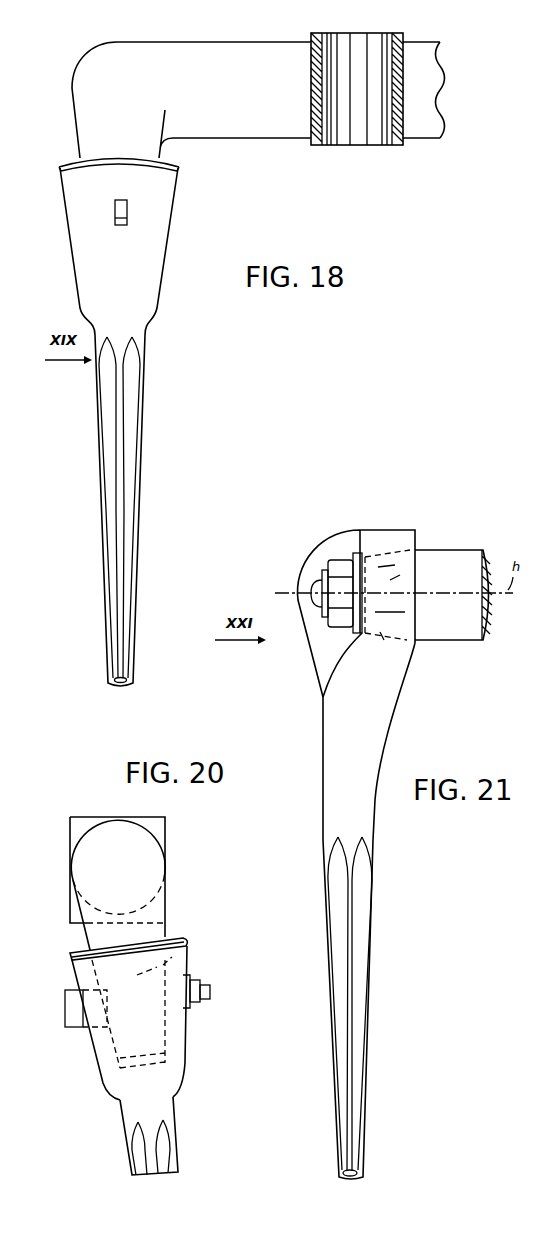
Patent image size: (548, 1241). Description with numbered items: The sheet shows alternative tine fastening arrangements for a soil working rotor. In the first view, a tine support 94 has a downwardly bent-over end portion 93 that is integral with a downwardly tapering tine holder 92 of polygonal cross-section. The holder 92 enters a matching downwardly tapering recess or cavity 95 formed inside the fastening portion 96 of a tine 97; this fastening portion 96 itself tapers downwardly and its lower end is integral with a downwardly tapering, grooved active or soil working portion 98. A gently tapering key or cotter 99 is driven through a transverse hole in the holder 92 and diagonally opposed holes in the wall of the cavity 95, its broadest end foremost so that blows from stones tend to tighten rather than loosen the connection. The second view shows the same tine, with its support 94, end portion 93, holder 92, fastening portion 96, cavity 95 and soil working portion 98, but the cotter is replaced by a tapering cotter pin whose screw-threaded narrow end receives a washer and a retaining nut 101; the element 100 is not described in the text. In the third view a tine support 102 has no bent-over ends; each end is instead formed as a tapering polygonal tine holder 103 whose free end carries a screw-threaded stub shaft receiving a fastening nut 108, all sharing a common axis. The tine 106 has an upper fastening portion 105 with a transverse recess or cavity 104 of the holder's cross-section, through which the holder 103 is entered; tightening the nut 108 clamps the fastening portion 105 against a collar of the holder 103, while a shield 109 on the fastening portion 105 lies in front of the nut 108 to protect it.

In FIG. 20, the tine holder 92 is at (187, 942).
In FIG. 18, the bent-over end portion 93 is at (112, 148).
In FIG. 20, the bent-over end portion 93 is at (122, 940).
In FIG. 18, the tine support 94 is at (282, 128).
In FIG. 20, the tine support 94 is at (140, 872).
In FIG. 20, the recess or cavity 95 is at (167, 1057).
In FIG. 18, the fastening portion 96 is at (158, 233).
In FIG. 20, the fastening portion 96 is at (115, 1077).
In FIG. 18, the tine 97 is at (148, 465).
In FIG. 18, the active or soil working portion 98 is at (130, 543).
In FIG. 20, the active or soil working portion 98 is at (168, 1158).
In FIG. 18, the key or cotter 99 is at (120, 199).
In FIG. 20, the bracket 100 is at (75, 1015).
In FIG. 20, the retaining nut 101 is at (203, 980).
In FIG. 21, the tine support 102 is at (470, 557).
In FIG. 21, the tine holder 103 is at (413, 572).
In FIG. 21, the recess or cavity 104 is at (376, 648).
In FIG. 21, the fastening portion 105 is at (395, 528).
In FIG. 21, the tine 106 is at (383, 928).
In FIG. 21, the fastening nut 108 is at (317, 563).
In FIG. 21, the shield 109 is at (317, 553).